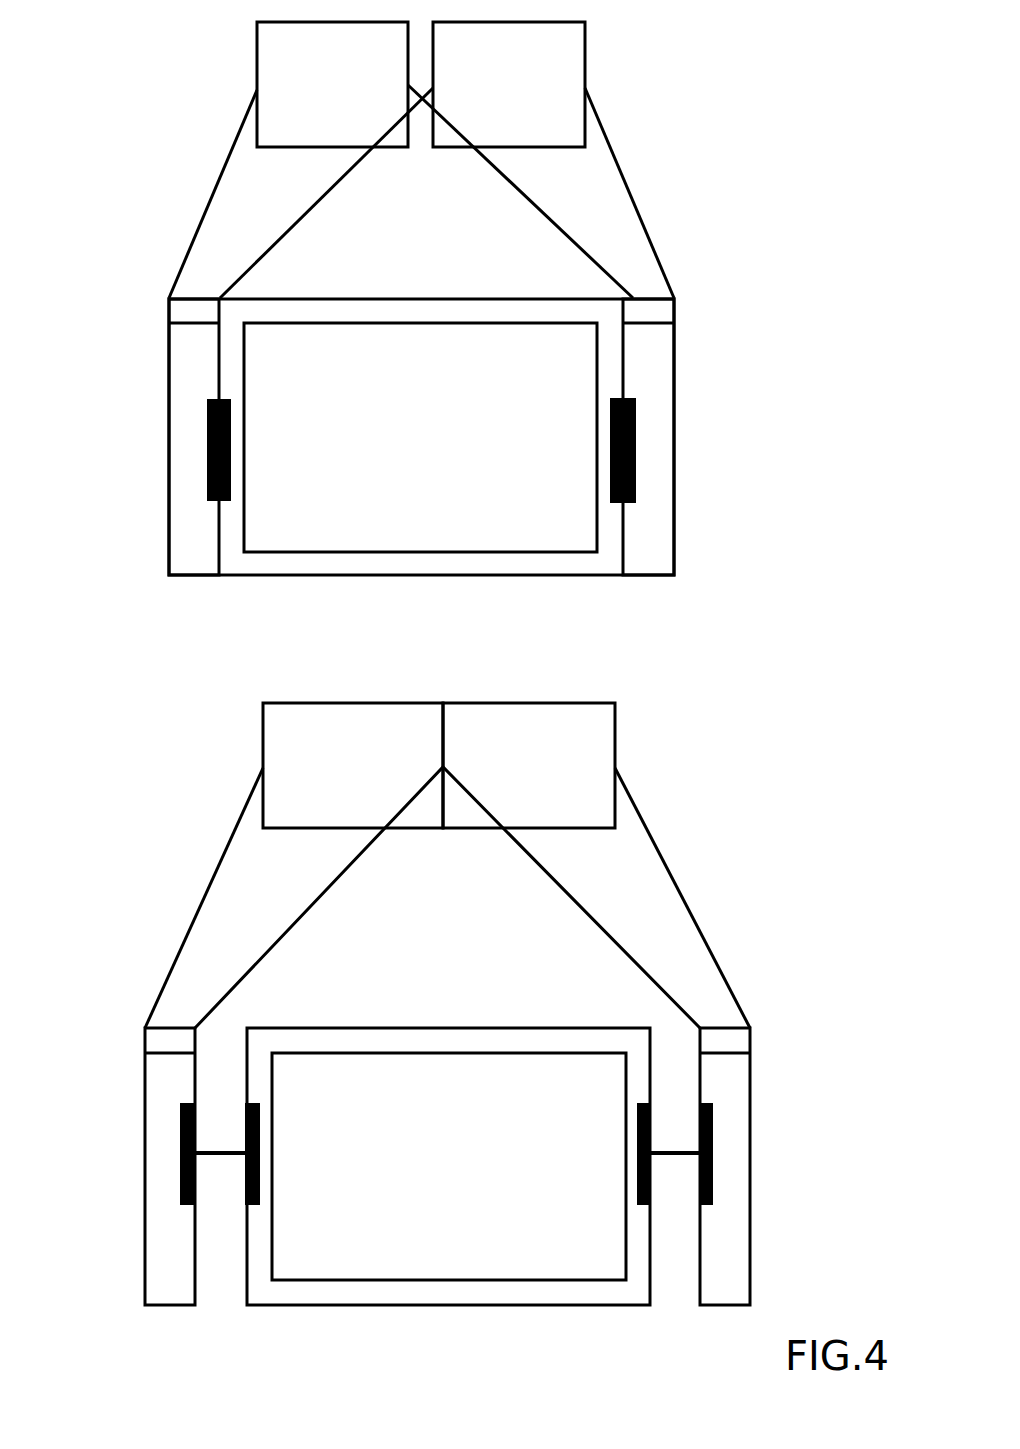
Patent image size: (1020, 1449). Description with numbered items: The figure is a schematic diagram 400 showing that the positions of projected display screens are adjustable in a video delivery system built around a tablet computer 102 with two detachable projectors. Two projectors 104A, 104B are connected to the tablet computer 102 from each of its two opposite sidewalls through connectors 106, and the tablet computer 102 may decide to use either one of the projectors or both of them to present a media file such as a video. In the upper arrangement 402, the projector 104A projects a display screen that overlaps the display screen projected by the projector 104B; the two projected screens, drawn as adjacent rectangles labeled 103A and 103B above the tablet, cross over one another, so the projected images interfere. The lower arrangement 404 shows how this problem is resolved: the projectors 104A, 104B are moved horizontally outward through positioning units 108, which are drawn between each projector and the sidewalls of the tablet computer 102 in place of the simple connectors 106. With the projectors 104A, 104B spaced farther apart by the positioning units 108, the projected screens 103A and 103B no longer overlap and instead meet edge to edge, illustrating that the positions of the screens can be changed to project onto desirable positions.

The schematic illustration 400 is at (745, 160).
The overlapping display screens state 402 is at (449, 330).
The adjusted display screens state 404 is at (447, 1036).
The tablet computer 102 is at (372, 298).
The first camera 103A is at (350, 425).
The second camera 103B is at (524, 425).
The projector 104A is at (169, 358).
The projector 104B is at (675, 365).
The connector 106 is at (207, 445).
The positioning unit 108 is at (231, 1148).